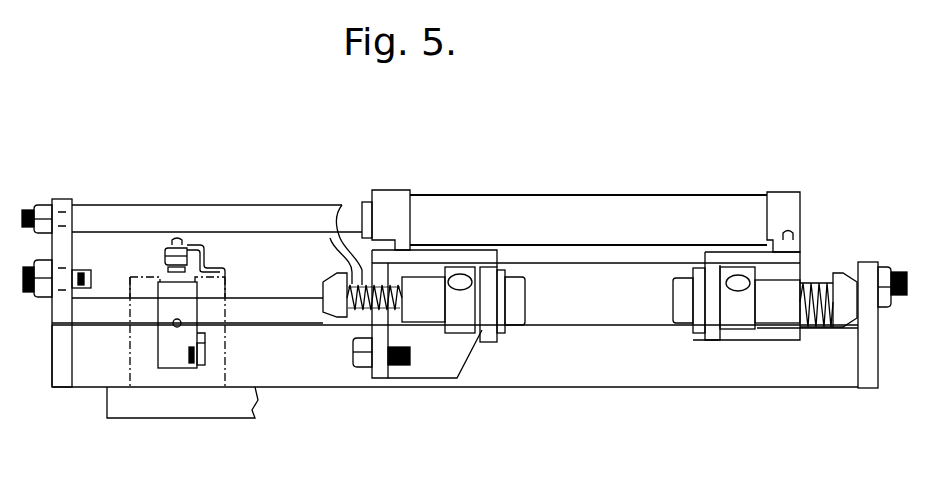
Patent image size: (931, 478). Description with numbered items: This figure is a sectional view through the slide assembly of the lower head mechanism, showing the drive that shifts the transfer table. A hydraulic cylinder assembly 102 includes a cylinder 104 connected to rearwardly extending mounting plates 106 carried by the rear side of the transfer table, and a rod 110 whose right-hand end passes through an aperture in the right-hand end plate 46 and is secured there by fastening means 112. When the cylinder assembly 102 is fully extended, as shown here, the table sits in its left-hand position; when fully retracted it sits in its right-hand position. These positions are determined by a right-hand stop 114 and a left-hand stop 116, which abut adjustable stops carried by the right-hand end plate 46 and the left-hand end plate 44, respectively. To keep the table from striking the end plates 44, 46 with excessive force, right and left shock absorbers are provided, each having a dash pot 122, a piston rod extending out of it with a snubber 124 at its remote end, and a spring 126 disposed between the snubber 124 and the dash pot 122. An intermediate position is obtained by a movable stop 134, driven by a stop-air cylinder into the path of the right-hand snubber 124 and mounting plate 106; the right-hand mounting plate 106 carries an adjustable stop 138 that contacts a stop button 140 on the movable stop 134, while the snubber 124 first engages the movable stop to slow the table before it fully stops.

The left-hand end plate 44 is at (868, 388).
The right-hand end plate 46 is at (52, 362).
The hydraulic cylinder assembly 102 is at (504, 184).
The cylinder 104 is at (645, 208).
The mounting plates 106 is at (478, 340).
The rod 110 is at (203, 205).
The fastening means 112 is at (50, 200).
The right-hand stop 114 is at (342, 212).
The left-hand stop 116 is at (817, 268).
The dash pot 122 is at (418, 320).
The snubber 124 is at (335, 273).
The spring 126 is at (345, 316).
The movable stop 134 is at (168, 370).
The adjustable stop 138 is at (362, 370).
The stop button 140 is at (201, 368).